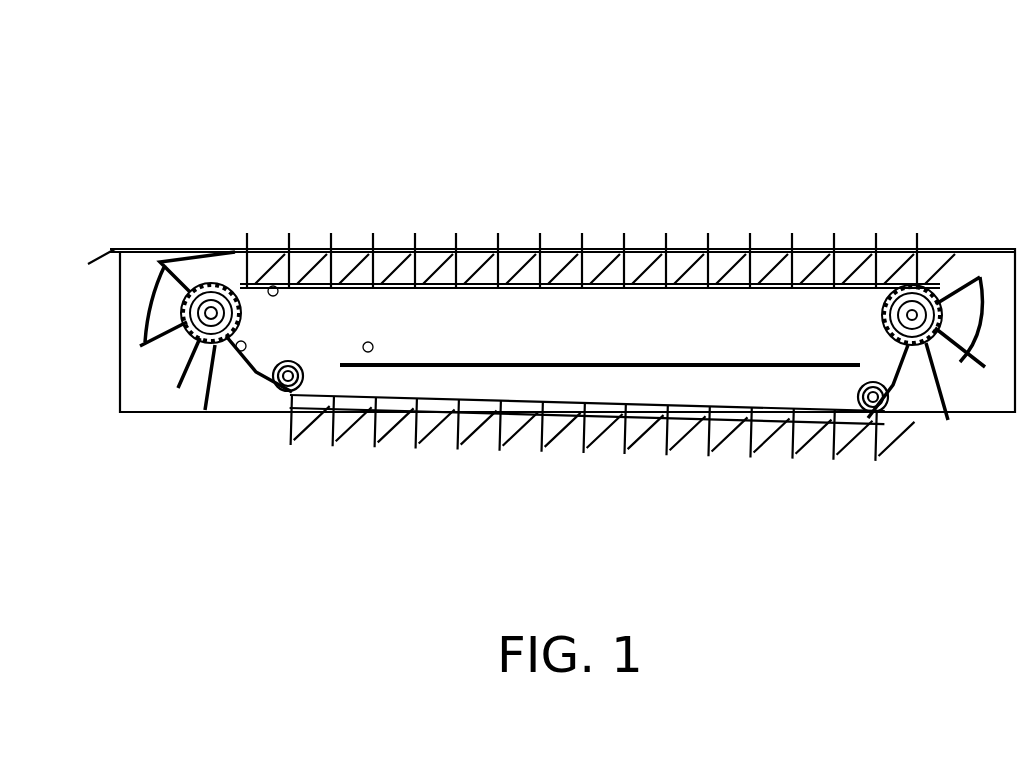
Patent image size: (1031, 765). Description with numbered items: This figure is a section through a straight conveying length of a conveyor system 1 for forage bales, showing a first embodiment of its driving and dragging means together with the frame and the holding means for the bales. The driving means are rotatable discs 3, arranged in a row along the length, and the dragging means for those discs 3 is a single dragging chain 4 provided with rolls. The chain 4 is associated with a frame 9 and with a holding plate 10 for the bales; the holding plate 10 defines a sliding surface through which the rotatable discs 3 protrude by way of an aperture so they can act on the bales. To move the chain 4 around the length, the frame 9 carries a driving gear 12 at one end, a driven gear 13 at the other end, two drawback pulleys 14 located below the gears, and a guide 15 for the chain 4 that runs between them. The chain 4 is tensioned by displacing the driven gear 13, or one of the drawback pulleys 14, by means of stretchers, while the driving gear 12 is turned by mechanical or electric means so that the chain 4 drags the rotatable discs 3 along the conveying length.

The conveyor system 1 is at (105, 207).
The rotatable discs 3 is at (374, 240).
The dragging chain 4 is at (450, 418).
The frame 9 is at (672, 345).
The holding plate 10 is at (206, 248).
The driving gear 12 is at (928, 290).
The driven gear 13 is at (200, 330).
The drawback pulleys 14 is at (282, 408).
The guide 15 is at (658, 243).